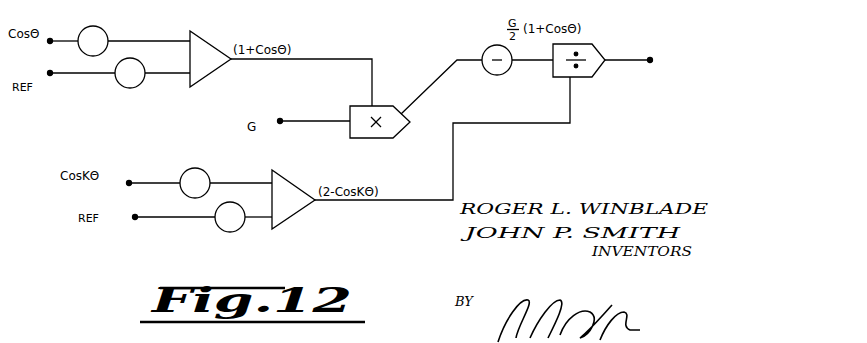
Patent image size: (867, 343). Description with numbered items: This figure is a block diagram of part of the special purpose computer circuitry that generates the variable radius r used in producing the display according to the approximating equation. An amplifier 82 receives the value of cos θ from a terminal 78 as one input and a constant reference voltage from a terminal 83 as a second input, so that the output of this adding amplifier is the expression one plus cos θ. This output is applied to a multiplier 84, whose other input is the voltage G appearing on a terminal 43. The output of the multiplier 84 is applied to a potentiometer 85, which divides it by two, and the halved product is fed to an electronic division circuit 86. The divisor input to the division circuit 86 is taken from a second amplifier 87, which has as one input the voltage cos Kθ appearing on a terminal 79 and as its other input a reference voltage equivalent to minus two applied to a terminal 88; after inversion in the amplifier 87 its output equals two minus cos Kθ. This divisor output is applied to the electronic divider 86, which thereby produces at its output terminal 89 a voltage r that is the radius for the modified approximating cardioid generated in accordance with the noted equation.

The terminal 78 is at (53, 39).
The terminal 83 is at (51, 75).
The amplifier 82 is at (207, 45).
The terminal 43 is at (282, 119).
The multiplier 84 is at (350, 135).
The potentiometer 85 is at (486, 47).
The electronic division circuit 86 is at (602, 50).
The output terminal 89 is at (651, 58).
The terminal 79 is at (131, 181).
The terminal 88 is at (135, 219).
The amplifier 87 is at (288, 215).